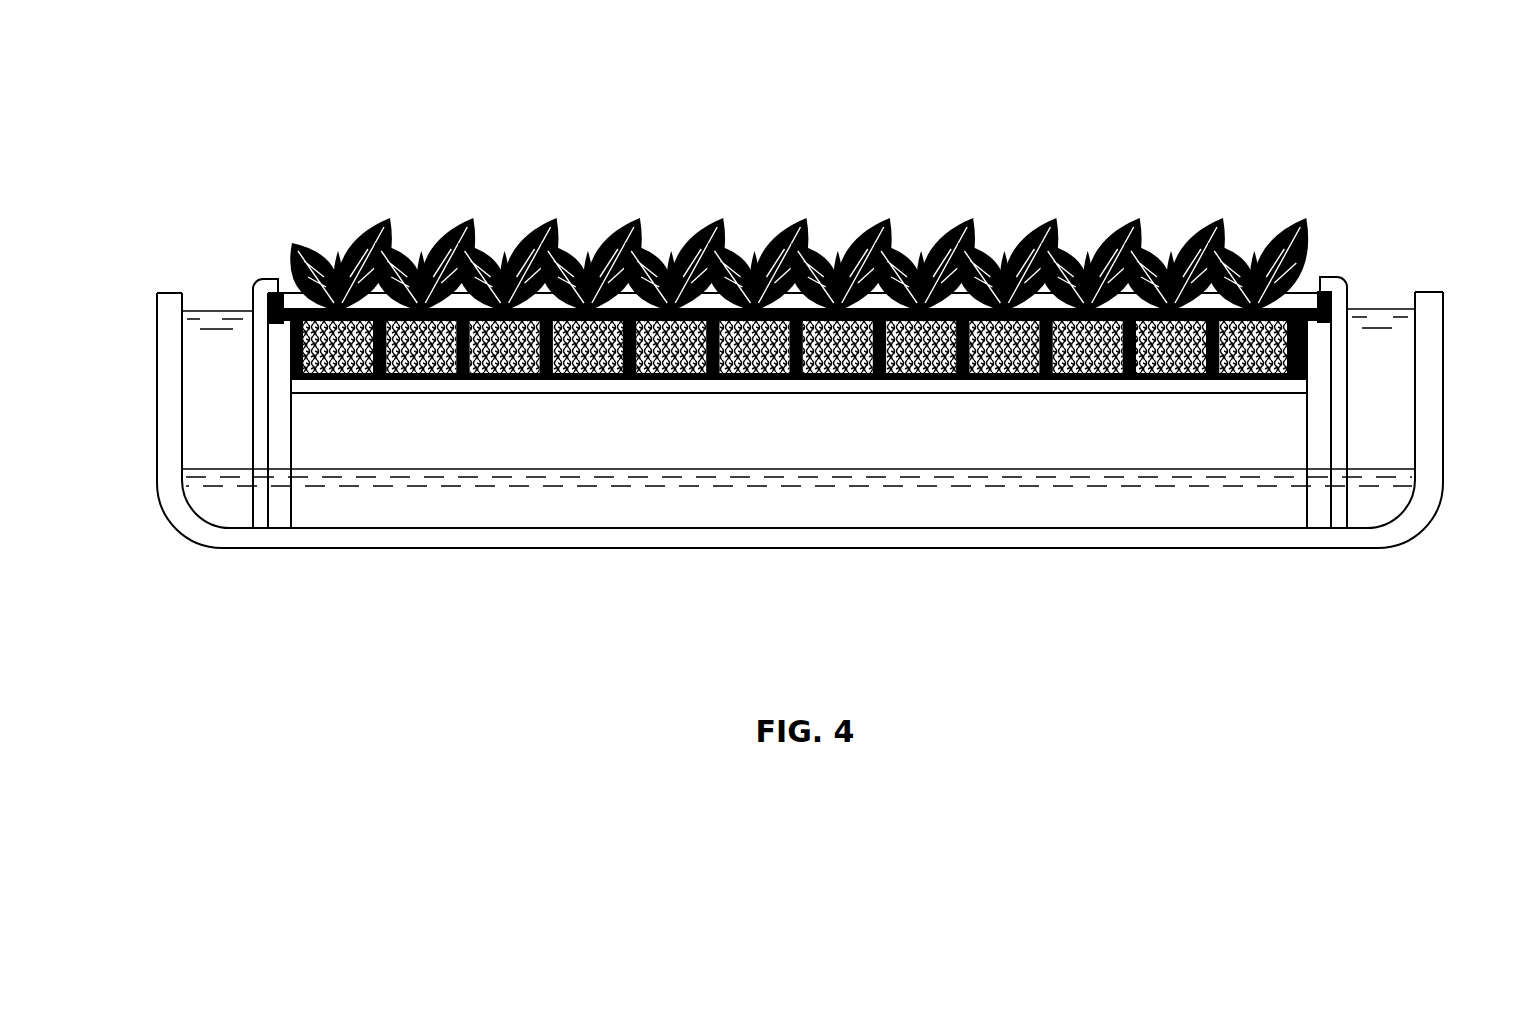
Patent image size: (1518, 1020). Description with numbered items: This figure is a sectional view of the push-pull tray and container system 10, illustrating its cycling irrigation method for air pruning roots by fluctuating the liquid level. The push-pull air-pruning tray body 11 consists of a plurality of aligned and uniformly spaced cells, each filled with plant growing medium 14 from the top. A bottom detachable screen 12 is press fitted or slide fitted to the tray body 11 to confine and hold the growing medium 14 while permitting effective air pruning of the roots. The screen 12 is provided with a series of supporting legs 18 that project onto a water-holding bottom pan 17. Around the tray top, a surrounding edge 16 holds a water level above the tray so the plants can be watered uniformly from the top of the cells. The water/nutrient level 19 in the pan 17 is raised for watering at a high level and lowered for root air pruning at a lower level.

The push-pull tray and container system 10 is at (795, 118).
The push-pull air-pruning tray body 11 is at (634, 378).
The bottom detachable screen 12 is at (797, 394).
The plant growing medium 14 is at (1118, 376).
The surrounding edge 16 is at (1332, 307).
The water-holding bottom pan 17 is at (1443, 398).
The supporting legs 18 is at (1348, 490).
The water/nutrient level 19 is at (1372, 465).